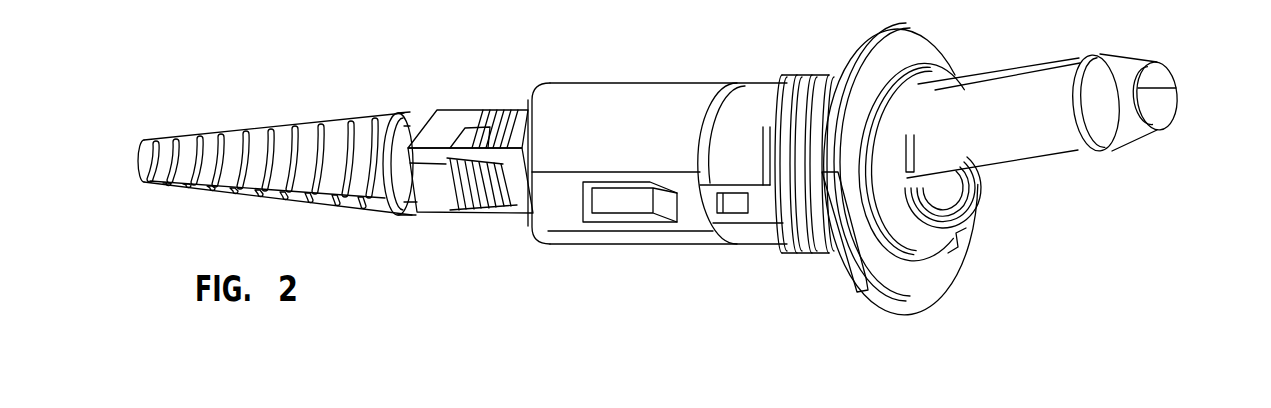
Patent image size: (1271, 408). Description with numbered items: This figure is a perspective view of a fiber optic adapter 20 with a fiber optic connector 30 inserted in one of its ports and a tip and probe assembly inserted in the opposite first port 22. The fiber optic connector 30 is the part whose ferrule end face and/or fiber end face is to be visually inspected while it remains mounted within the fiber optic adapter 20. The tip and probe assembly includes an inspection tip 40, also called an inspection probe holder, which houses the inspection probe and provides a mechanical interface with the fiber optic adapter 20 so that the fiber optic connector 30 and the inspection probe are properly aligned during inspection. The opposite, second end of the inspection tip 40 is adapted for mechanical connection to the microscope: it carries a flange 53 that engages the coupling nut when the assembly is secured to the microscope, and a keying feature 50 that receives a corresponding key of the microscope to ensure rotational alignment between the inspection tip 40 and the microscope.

The fiber optic adapter 20 is at (634, 245).
The first port 22 is at (937, 199).
The fiber optic connector 30 is at (462, 107).
The inspection tip 40 is at (1061, 160).
The keying feature 50 is at (1150, 87).
The flange 53 is at (1110, 147).